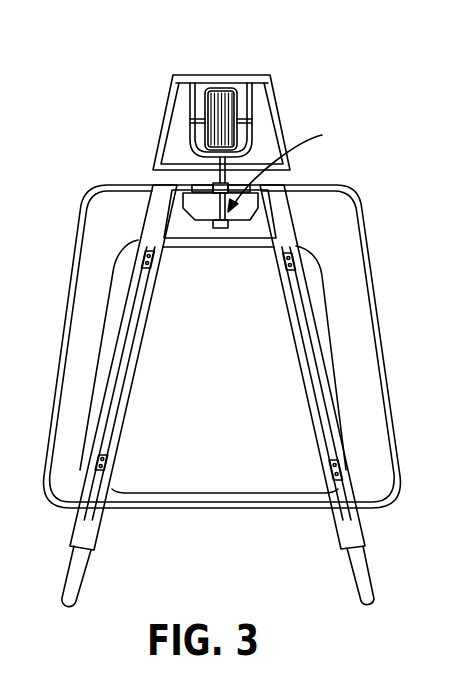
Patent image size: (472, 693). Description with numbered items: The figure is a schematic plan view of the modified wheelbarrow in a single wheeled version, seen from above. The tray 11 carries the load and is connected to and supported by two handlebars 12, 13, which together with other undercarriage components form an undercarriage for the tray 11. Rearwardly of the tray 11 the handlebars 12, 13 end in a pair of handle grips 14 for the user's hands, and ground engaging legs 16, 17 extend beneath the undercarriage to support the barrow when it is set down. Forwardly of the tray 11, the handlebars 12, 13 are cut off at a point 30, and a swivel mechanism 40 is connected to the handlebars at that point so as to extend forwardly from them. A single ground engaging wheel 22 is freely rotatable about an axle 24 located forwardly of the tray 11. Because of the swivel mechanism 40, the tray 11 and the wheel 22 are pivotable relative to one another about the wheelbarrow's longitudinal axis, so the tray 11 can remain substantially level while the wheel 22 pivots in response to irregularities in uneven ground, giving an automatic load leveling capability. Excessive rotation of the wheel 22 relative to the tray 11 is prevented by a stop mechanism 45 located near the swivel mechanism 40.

The tray 11 is at (181, 510).
The handlebar 12 is at (313, 342).
The handlebar 13 is at (120, 346).
The handle grips 14 is at (363, 583).
The ground engaging leg 16 is at (330, 440).
The ground engaging leg 17 is at (107, 440).
The ground engaging wheel 22 is at (222, 88).
The axle 24 is at (247, 124).
The cut-off point 30 is at (192, 189).
The swivel mechanism 40 is at (288, 164).
The stop mechanism 45 is at (195, 185).